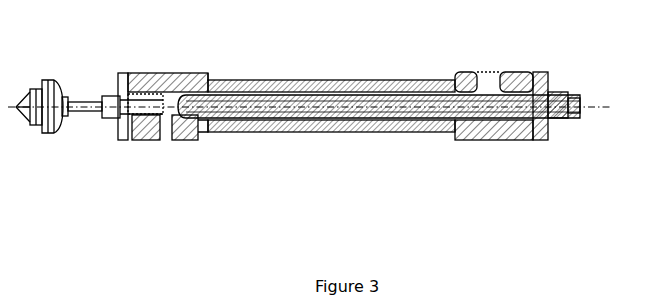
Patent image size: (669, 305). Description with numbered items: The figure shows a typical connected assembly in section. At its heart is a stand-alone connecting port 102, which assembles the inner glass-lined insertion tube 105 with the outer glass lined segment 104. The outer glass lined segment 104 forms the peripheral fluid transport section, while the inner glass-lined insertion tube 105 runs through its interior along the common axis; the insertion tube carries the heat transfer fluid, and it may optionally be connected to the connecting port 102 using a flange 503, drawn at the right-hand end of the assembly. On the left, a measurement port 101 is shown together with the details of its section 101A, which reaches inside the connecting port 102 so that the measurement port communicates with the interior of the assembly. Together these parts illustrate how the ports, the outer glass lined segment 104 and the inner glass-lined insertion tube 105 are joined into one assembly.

The measurement port 101 is at (63, 80).
The section reaching inside the port 101A is at (137, 72).
The stand-alone connecting port 102 is at (159, 61).
The outer glass lined segment 104 is at (303, 80).
The inner glass-lined insertion tube 105 is at (423, 108).
The flange 503 is at (551, 81).